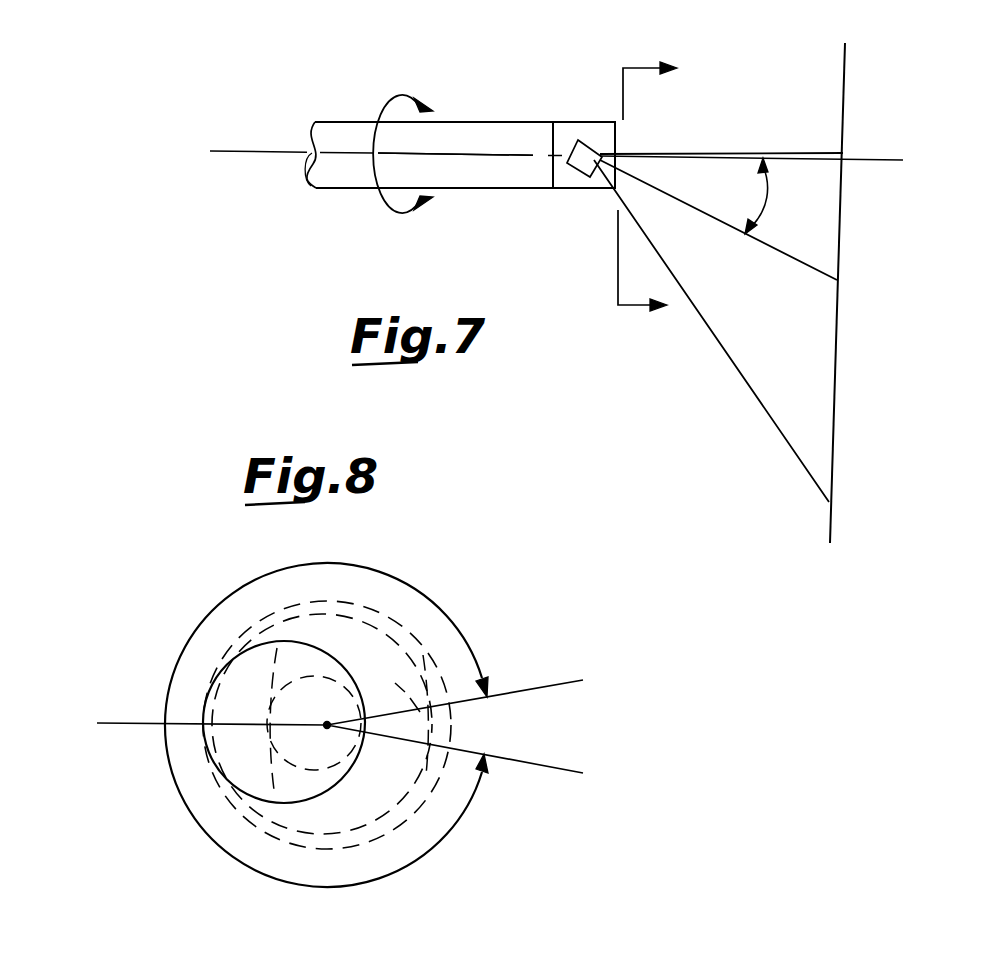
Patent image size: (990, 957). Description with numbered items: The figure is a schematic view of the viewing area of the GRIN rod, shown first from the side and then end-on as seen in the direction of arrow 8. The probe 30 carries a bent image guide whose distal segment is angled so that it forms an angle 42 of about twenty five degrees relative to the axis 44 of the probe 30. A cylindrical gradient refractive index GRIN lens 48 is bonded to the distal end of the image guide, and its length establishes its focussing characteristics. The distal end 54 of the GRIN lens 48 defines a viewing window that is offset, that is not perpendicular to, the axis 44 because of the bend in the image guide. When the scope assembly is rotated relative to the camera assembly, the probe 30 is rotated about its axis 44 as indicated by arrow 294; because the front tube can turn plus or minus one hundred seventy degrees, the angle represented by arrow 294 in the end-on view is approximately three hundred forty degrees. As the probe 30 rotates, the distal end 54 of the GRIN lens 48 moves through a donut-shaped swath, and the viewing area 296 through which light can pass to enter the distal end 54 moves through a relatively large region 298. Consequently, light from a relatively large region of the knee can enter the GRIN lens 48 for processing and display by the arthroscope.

In FIG. 7, the probe 30 is at (462, 173).
In FIG. 7, the axis 44 is at (485, 153).
In FIG. 8, the axis 44 is at (327, 725).
In FIG. 7, the GRIN lens 48 is at (580, 183).
In FIG. 7, the distal end 54 is at (618, 138).
In FIG. 7, the angle 42 is at (758, 209).
In FIG. 7, the arrow 294 is at (402, 96).
In FIG. 8, the arrow 294 is at (202, 627).
In FIG. 7, the viewing area 296 is at (843, 200).
In FIG. 8, the viewing area 296 is at (203, 698).
In FIG. 8, the region 298 is at (234, 813).
In FIG. 7, the arrow 8 is at (647, 186).